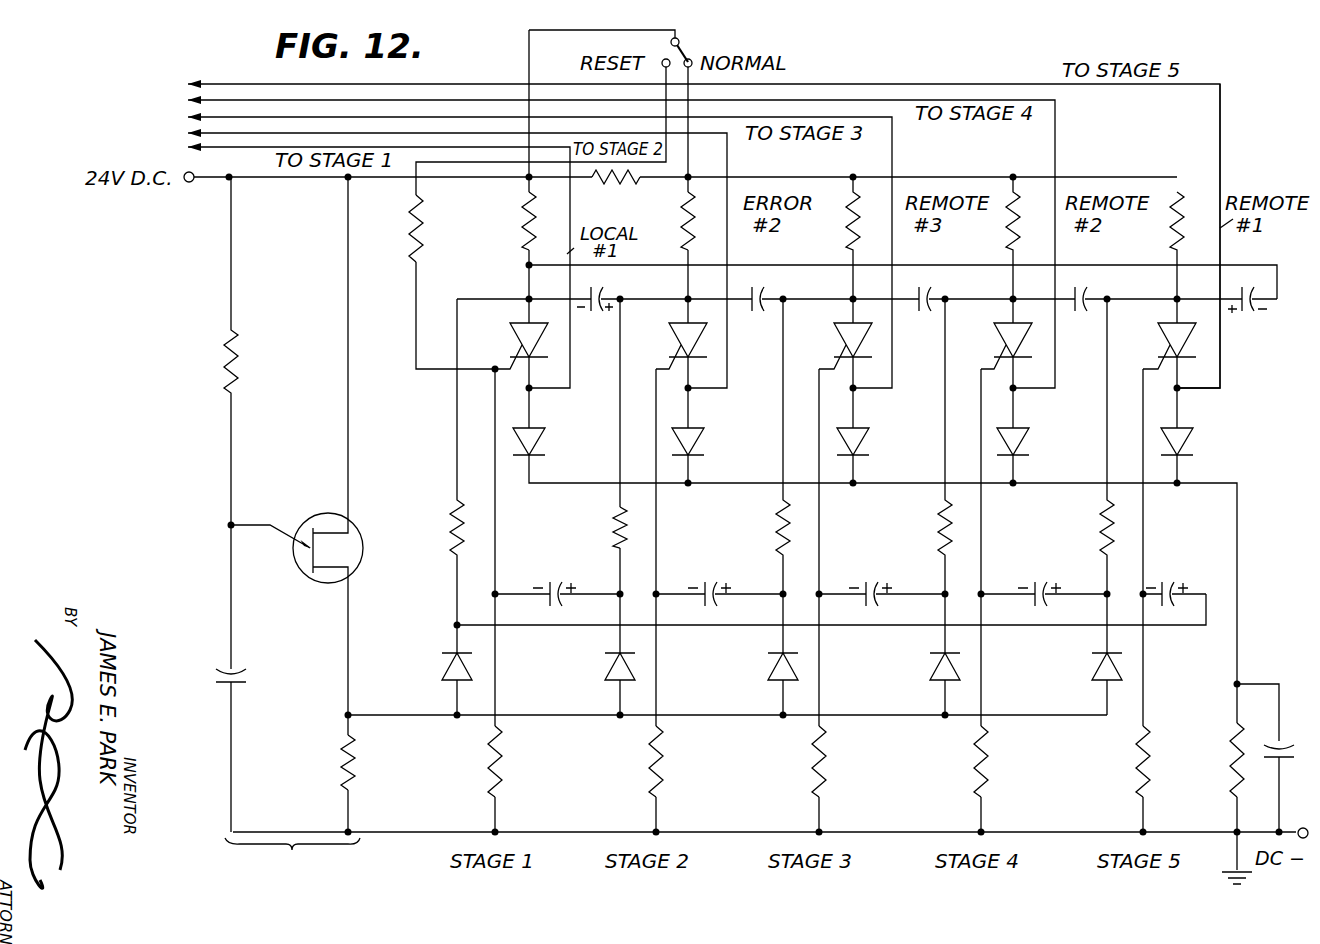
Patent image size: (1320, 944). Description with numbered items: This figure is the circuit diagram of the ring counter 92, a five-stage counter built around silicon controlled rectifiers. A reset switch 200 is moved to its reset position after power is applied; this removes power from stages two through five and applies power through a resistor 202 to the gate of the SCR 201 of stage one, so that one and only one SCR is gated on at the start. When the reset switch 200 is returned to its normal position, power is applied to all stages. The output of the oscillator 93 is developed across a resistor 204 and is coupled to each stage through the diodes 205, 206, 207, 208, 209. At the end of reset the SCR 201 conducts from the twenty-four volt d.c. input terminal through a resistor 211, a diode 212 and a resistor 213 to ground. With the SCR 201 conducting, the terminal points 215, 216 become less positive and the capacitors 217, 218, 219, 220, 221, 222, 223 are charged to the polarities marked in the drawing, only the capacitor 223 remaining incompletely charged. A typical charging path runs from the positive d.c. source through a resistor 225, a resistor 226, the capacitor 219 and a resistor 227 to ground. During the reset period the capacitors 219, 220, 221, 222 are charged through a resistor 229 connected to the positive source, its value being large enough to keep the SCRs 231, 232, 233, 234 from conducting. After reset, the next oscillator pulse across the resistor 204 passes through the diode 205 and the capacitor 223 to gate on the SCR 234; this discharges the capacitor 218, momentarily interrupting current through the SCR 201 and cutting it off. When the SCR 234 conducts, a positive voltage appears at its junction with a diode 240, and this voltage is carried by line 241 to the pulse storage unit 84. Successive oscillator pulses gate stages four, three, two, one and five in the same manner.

The pulse storage unit 84 is at (610, 224).
The ring counter 92 is at (89, 263).
The oscillator 93 is at (301, 525).
The reset switch 200 is at (684, 47).
The SCR 201 is at (518, 343).
The resistor 202 is at (425, 223).
The resistor 204 is at (362, 753).
The diode 205 is at (449, 664).
The diode 206 is at (609, 670).
The diode 207 is at (773, 673).
The diode 208 is at (936, 675).
The diode 209 is at (1098, 675).
The resistor 211 is at (524, 233).
The diode 212 is at (548, 438).
The resistor 213 is at (1233, 765).
The terminal point 215 is at (527, 295).
The terminal point 216 is at (457, 624).
The capacitor 217 is at (602, 298).
The capacitor 218 is at (1250, 318).
The capacitor 219 is at (556, 578).
The capacitor 220 is at (710, 578).
The capacitor 221 is at (871, 578).
The capacitor 222 is at (1041, 578).
The capacitor 223 is at (1167, 578).
The resistor 225 is at (683, 230).
The resistor 226 is at (620, 512).
The resistor 227 is at (510, 756).
The resistor 229 is at (614, 193).
The SCR 231 is at (680, 341).
The SCR 232 is at (843, 343).
The SCR 233 is at (1003, 340).
The SCR 234 is at (1167, 343).
The diode 240 is at (1198, 436).
The line 241 is at (1222, 376).